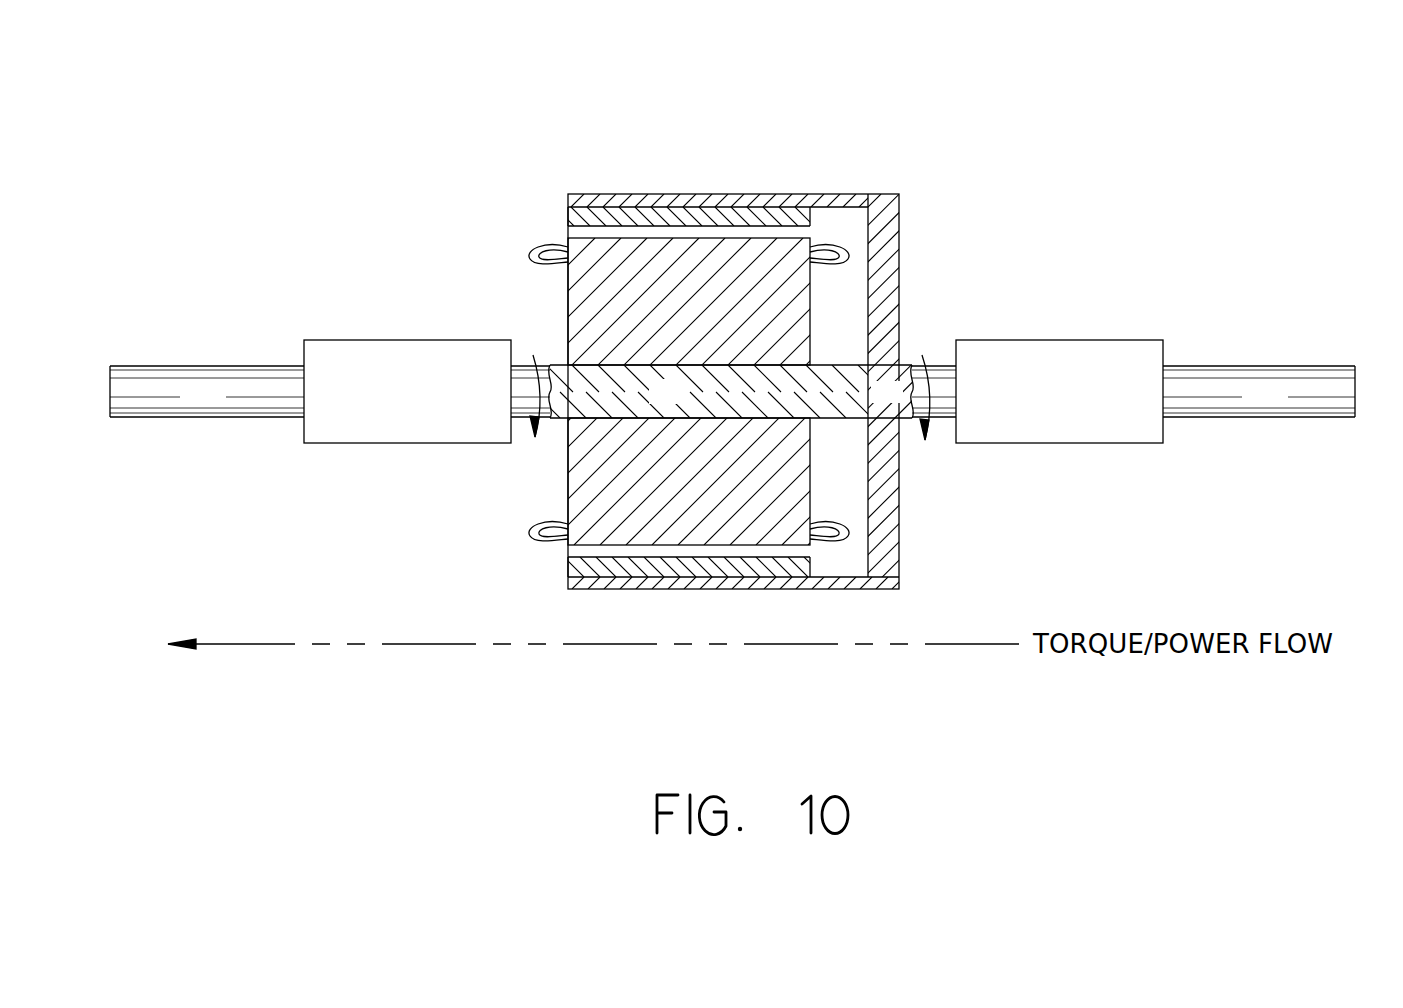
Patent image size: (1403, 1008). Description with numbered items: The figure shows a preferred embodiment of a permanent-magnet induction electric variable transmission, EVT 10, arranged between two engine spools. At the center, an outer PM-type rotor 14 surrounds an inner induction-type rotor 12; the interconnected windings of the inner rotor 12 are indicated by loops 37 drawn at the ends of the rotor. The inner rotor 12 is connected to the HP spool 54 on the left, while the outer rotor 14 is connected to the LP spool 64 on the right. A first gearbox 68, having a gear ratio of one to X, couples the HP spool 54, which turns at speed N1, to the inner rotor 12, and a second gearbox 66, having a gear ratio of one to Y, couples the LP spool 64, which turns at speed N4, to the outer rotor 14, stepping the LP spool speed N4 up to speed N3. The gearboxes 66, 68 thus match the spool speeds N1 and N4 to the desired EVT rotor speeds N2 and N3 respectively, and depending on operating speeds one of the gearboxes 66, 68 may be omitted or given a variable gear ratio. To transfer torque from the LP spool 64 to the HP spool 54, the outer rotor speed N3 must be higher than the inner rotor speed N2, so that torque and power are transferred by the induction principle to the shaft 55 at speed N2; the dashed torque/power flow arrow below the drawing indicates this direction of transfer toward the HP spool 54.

The EVT 10 is at (975, 80).
The inner induction-type rotor 12 is at (584, 237).
The outer PM-type rotor 14 is at (899, 233).
The loops 37 is at (535, 541).
The HP spool 54 is at (137, 365).
The shaft 55 is at (548, 365).
The LP spool 64 is at (1323, 367).
The second gearbox 66 is at (997, 340).
The first gearbox 68 is at (400, 340).